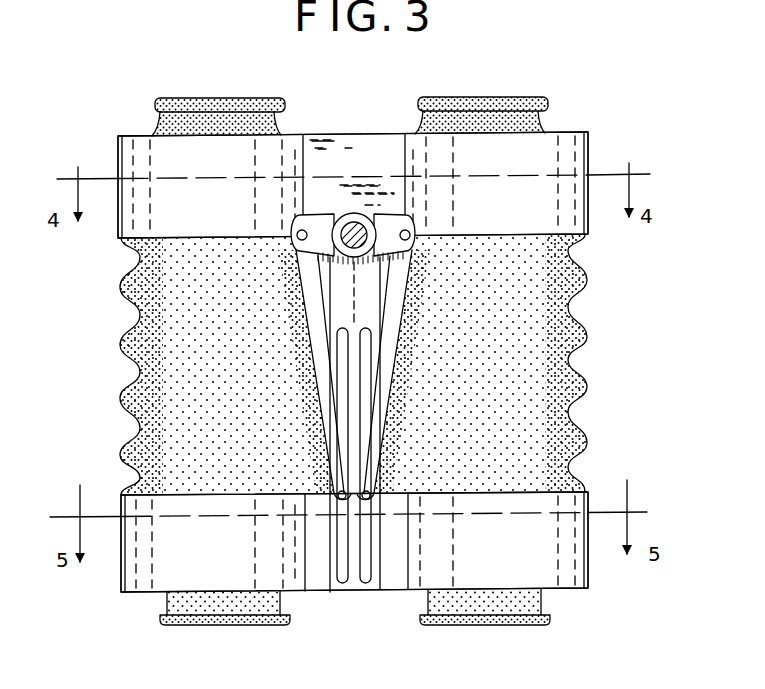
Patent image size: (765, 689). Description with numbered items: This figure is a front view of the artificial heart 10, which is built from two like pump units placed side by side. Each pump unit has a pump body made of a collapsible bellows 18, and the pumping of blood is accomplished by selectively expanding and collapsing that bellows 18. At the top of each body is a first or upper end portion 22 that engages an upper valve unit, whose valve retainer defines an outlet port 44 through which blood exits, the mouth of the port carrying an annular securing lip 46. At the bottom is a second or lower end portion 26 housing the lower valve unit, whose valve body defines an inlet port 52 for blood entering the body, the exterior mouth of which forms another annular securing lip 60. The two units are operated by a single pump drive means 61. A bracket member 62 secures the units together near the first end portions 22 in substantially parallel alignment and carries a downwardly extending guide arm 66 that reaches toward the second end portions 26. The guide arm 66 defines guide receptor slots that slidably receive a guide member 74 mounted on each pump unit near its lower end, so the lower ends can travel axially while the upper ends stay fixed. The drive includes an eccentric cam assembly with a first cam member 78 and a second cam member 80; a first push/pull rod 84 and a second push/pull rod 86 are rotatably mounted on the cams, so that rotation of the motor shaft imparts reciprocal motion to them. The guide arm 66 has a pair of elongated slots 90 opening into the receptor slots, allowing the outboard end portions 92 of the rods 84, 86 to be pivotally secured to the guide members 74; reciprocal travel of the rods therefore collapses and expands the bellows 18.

The heart 10 is at (624, 114).
The collapsible bellows 18 is at (122, 357).
The first or upper end portion 22 is at (118, 148).
The second or lower end portion 26 is at (120, 558).
The outlet port 44 is at (202, 98).
The annular securing lip 46 is at (155, 110).
The inlet port 52 is at (228, 627).
The annular securing lip 60 is at (161, 619).
The pump drive means 61 is at (354, 158).
The bracket member 62 is at (321, 137).
The guide arm 66 is at (353, 591).
The guide member 74 is at (323, 591).
The first cam member 78 is at (322, 222).
The second cam member 80 is at (393, 222).
The first push/pull rod 84 is at (300, 298).
The second push/pull rod 86 is at (387, 367).
The elongated slots 90 is at (341, 561).
The outboard end portions 92 is at (337, 505).